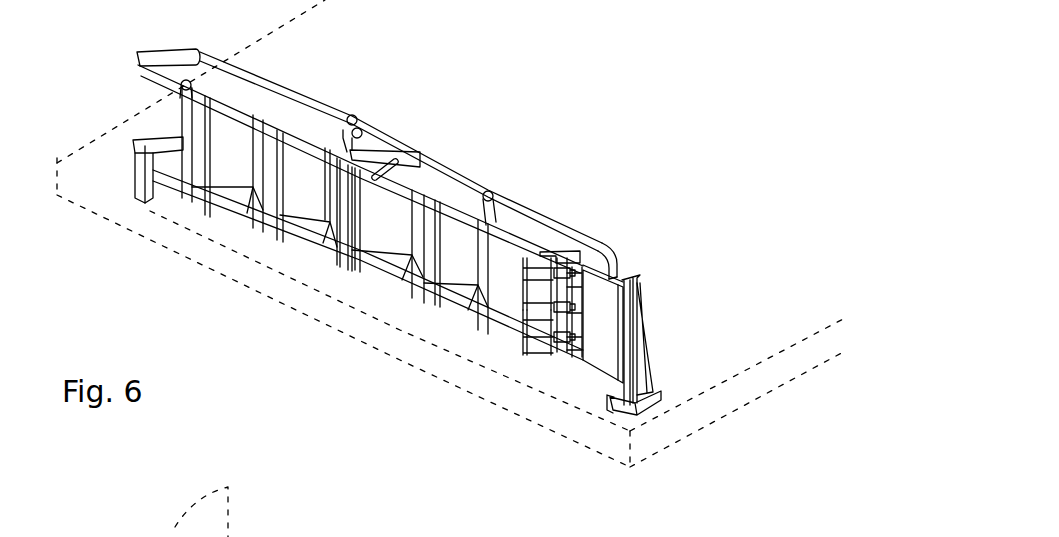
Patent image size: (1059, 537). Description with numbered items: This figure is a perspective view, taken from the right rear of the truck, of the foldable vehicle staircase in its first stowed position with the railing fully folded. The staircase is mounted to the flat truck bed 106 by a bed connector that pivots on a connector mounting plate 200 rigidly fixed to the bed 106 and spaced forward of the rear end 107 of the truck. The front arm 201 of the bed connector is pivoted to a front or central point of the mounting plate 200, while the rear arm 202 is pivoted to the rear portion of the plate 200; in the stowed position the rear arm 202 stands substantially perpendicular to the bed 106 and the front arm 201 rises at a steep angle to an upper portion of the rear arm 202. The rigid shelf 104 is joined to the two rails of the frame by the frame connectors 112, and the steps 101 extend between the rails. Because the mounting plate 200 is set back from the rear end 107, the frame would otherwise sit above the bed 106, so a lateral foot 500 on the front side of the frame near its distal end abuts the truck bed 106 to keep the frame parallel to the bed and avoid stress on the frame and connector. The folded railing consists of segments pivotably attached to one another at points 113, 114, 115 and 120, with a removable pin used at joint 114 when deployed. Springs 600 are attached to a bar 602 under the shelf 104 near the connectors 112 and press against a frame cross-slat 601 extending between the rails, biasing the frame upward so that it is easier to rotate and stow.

The steps 101 is at (397, 233).
The shelf 104 is at (603, 330).
The truck bed 106 is at (722, 170).
The rear end of the truck 107 is at (210, 252).
The frame connectors 112 is at (556, 256).
The railing pivot point 113 is at (353, 114).
The railing joint 114 is at (190, 82).
The railing pivot point 115 is at (393, 157).
The railing pivot point 120 is at (485, 193).
The connector mounting plate 200 is at (637, 410).
The front arm 201 is at (650, 370).
The rear arm 202 is at (610, 403).
The lateral foot 500 is at (133, 177).
The springs 600 is at (555, 360).
The frame cross-slat 601 is at (522, 300).
The bar 602 is at (525, 325).